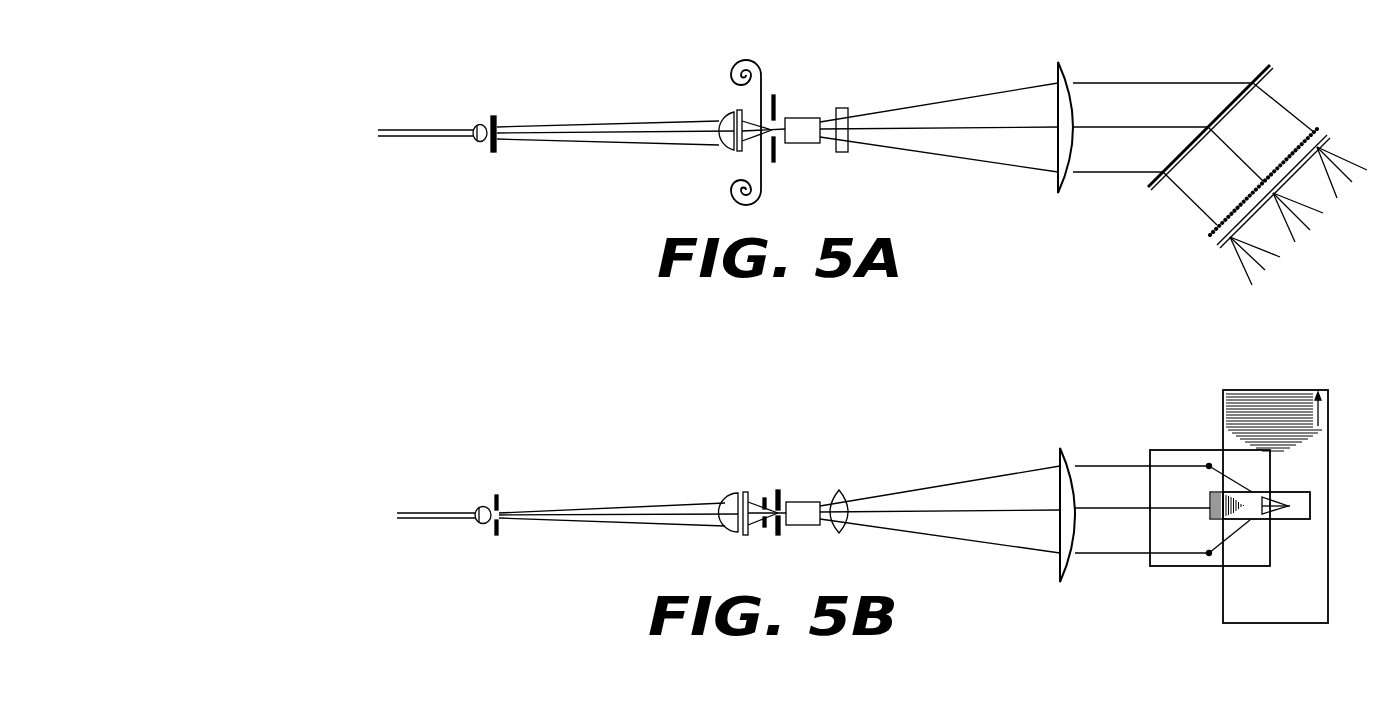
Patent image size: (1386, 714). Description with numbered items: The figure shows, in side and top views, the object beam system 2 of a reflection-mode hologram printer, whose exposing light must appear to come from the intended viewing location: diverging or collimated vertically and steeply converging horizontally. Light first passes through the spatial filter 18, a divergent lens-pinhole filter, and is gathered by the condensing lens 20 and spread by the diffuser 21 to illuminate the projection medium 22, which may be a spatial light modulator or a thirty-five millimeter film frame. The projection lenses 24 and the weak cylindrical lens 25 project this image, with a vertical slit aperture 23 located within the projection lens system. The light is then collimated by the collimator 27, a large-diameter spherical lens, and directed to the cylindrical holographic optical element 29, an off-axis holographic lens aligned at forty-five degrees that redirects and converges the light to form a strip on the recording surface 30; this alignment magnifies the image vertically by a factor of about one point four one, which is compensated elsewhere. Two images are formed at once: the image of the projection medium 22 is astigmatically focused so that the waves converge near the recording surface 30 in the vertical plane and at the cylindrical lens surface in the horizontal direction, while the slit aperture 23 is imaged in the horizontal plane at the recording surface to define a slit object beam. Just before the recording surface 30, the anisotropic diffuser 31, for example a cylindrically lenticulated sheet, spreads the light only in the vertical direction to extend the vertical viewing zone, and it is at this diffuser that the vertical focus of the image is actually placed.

In FIG. 5A, the object beam system 2 is at (538, 62).
In FIG. 5B, the object beam system 2 is at (545, 476).
In FIG. 5A, the spatial filter 18 is at (478, 124).
In FIG. 5B, the spatial filter 18 is at (484, 506).
In FIG. 5A, the condensing lens 20 is at (724, 118).
In FIG. 5B, the condensing lens 20 is at (728, 497).
In FIG. 5A, the diffuser 21 is at (738, 110).
In FIG. 5B, the diffuser 21 is at (744, 492).
In FIG. 5A, the projection medium 22 is at (761, 70).
In FIG. 5B, the projection medium 22 is at (764, 498).
In FIG. 5A, the slit aperture 23 is at (774, 95).
In FIG. 5B, the slit aperture 23 is at (778, 490).
In FIG. 5A, the projection lenses 24 is at (810, 100).
In FIG. 5B, the projection lenses 24 is at (804, 500).
In FIG. 5A, the weak cylindrical lens 25 is at (847, 108).
In FIG. 5B, the weak cylindrical lens 25 is at (845, 490).
In FIG. 5A, the collimator 27 is at (1061, 66).
In FIG. 5B, the collimator 27 is at (1063, 450).
In FIG. 5A, the cylindrical holographic optical element 29 is at (1258, 70).
In FIG. 5B, the cylindrical holographic optical element 29 is at (1176, 450).
In FIG. 5A, the recording surface 30 is at (1330, 138).
In FIG. 5B, the recording surface 30 is at (1300, 554).
In FIG. 5A, the anisotropic diffuser 31 is at (1316, 127).
In FIG. 5B, the anisotropic diffuser 31 is at (1310, 506).